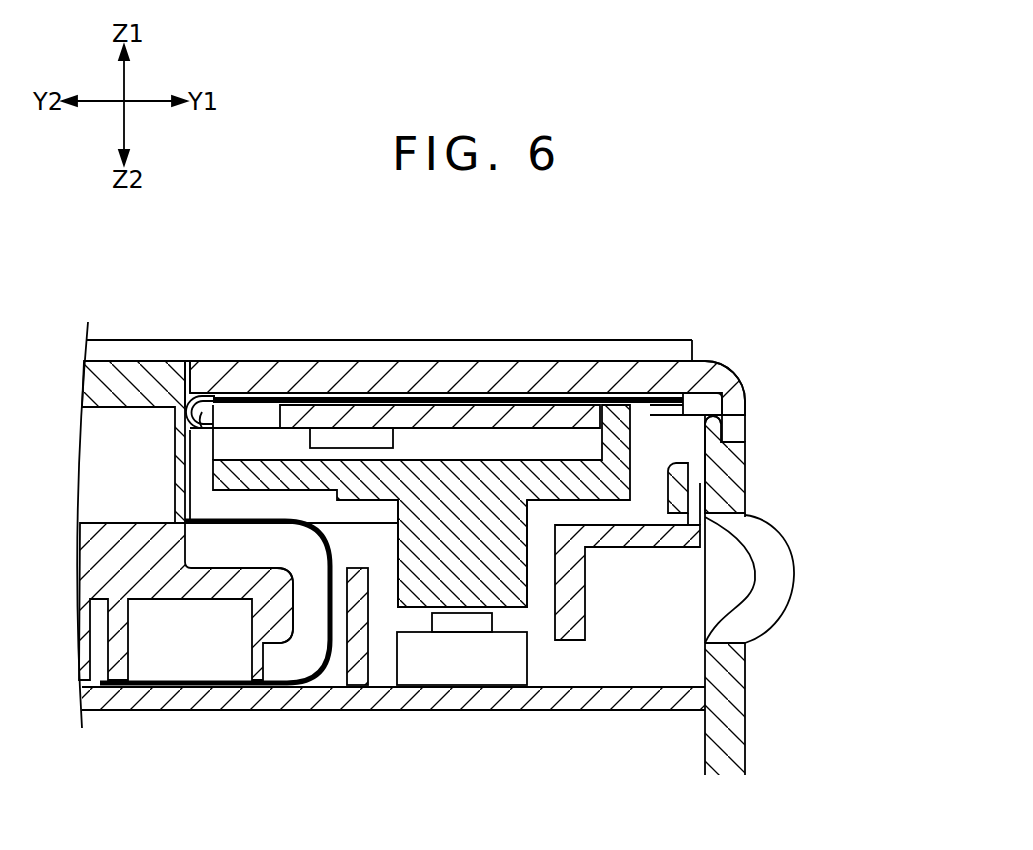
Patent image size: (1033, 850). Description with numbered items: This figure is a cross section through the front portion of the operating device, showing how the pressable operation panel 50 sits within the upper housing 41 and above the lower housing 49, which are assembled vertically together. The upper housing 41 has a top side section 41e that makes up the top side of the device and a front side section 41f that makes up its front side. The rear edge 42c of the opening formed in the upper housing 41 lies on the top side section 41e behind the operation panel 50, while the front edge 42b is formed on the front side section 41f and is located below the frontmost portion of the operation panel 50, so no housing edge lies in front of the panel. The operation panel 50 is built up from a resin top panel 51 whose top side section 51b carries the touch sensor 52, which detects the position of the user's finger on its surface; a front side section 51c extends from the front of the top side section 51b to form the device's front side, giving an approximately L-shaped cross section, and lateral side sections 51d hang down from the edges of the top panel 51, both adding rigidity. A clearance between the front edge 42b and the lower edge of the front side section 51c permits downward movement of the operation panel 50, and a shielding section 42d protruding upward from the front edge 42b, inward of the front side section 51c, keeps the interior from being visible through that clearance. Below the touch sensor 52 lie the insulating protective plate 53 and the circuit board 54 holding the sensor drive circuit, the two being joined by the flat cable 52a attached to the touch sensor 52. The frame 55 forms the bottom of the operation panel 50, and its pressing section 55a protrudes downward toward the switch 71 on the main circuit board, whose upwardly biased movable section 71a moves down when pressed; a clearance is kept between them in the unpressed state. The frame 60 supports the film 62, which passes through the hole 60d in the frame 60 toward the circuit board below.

The upper housing 41 is at (157, 361).
The top side section 41e is at (117, 383).
The front side section 41f is at (730, 488).
The front edge 42b is at (735, 437).
The rear edge 42c is at (191, 382).
The shielding section 42d is at (712, 427).
The lower housing 49 is at (732, 707).
The operation panel 50 is at (593, 346).
The top panel 51 is at (263, 361).
The top side section 51b is at (527, 383).
The front side section 51c is at (733, 402).
The lateral side section 51d is at (697, 408).
The touch sensor 52 is at (310, 397).
The flat cable 52a is at (193, 427).
The protective plate 53 is at (355, 412).
The circuit board 54 is at (417, 418).
The frame 55 is at (465, 473).
The pressing section 55a is at (518, 570).
The frame 60 is at (108, 565).
The hole 60d is at (308, 625).
The film 62 is at (318, 675).
The switch 71 is at (432, 677).
The movable section 71a is at (470, 625).